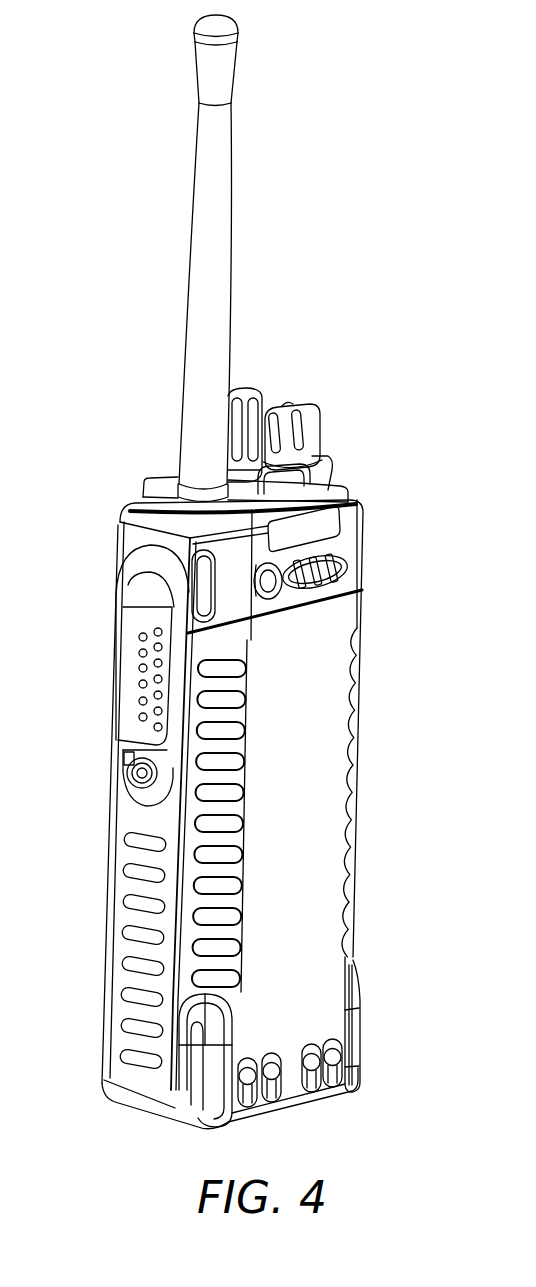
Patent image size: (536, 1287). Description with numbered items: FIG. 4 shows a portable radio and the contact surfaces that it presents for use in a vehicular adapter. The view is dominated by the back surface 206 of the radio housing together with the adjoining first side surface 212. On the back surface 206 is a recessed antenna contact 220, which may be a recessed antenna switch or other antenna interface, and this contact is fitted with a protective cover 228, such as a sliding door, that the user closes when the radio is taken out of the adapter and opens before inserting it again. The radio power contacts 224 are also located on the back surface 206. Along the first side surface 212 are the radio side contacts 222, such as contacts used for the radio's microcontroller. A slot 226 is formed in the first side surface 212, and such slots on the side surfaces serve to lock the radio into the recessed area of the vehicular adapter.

The back surface 206 is at (223, 593).
The first side surface 212 is at (133, 818).
The recessed antenna contact 220 is at (283, 593).
The radio side contacts 222 is at (139, 637).
The radio power contacts 224 is at (273, 1094).
The slot 226 is at (197, 568).
The protective cover 228 is at (340, 563).